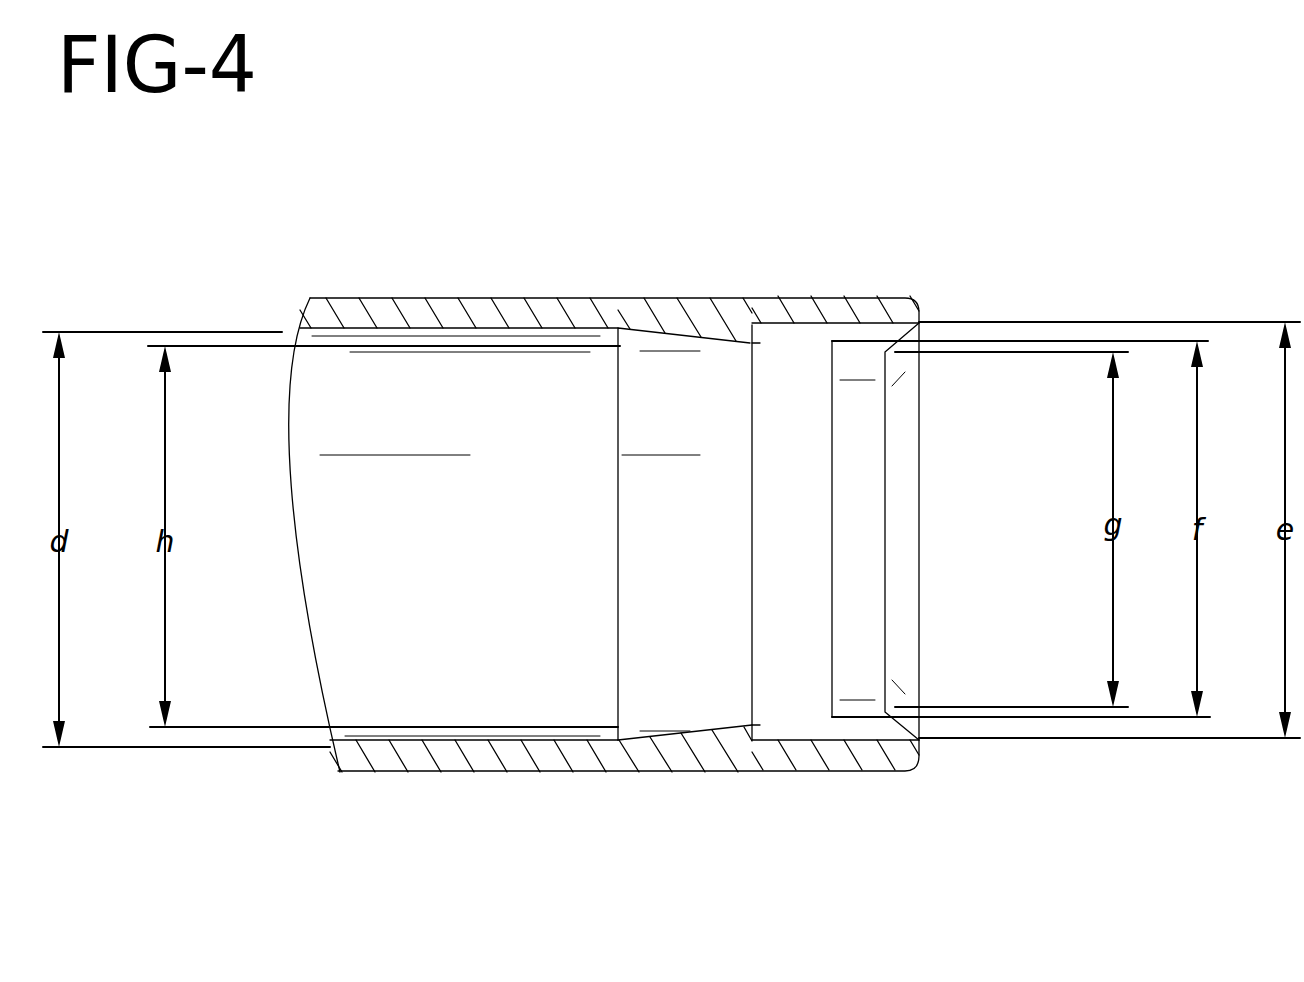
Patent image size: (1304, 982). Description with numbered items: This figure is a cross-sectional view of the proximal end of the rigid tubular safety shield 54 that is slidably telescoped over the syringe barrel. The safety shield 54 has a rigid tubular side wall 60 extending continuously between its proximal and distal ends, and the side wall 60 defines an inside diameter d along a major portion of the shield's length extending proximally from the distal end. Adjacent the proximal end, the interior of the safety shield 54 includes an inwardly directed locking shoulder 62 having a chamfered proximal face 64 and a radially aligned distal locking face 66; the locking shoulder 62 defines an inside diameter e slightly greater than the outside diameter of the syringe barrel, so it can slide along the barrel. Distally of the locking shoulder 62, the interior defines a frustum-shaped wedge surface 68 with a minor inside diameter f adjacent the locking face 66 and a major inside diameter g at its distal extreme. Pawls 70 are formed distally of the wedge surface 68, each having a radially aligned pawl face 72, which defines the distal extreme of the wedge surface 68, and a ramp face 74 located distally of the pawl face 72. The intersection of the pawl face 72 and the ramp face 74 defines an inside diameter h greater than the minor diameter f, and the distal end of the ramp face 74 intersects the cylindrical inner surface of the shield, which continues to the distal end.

The safety shield 54 is at (358, 298).
The tubular side wall 60 is at (485, 298).
The locking shoulder 62 is at (870, 722).
The chamfered proximal face 64 is at (905, 714).
The distal locking face 66 is at (832, 350).
The wedge surface 68 is at (772, 330).
The pawl 70 is at (720, 343).
The pawl face 72 is at (758, 735).
The ramp face 74 is at (732, 343).